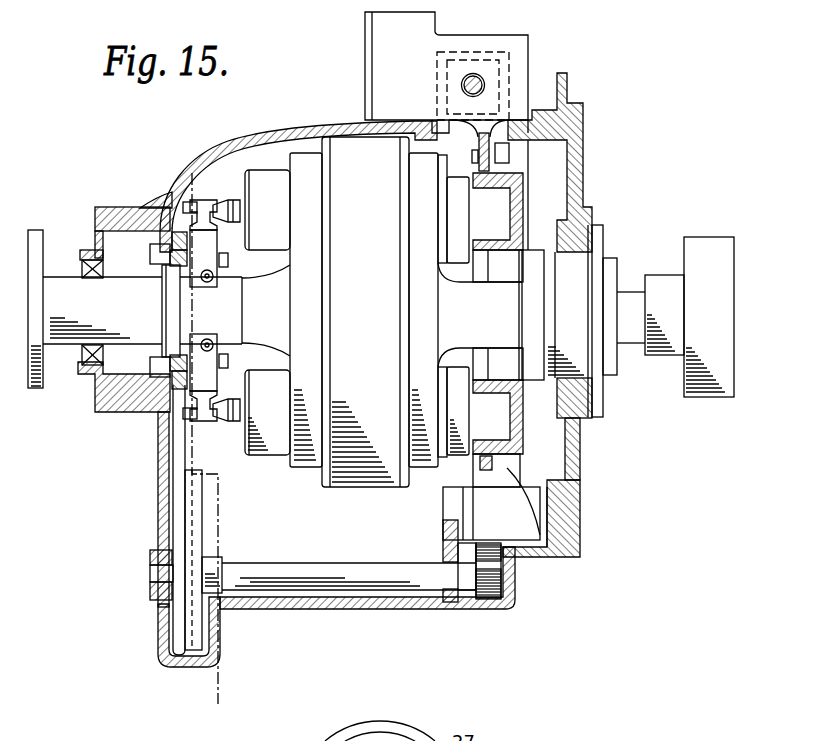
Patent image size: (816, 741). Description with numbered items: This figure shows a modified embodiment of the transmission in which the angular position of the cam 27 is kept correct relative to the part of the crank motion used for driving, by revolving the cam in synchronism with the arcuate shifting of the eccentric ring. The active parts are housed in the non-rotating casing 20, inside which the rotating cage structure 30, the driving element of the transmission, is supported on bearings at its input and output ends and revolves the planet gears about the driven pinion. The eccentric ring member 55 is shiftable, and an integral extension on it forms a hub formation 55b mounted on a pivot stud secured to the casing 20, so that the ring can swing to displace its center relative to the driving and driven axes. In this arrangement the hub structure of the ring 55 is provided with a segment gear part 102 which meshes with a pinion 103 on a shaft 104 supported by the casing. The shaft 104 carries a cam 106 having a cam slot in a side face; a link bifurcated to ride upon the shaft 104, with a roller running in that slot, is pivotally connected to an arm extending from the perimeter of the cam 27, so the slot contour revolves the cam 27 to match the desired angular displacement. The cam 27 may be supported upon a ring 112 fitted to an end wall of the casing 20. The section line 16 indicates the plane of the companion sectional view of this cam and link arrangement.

The casing 20 is at (222, 136).
The fixed cam member 27 is at (167, 232).
The section line 16- 16 is at (178, 183).
The ring 112 is at (168, 276).
The eccentric ring member 55 is at (524, 189).
The rotating cage structure 30 is at (307, 477).
The hub formation 55b is at (520, 520).
The segment gear part 102 is at (520, 553).
The pinion 103 is at (495, 611).
The shaft 104 is at (377, 580).
The cam 106 is at (187, 650).